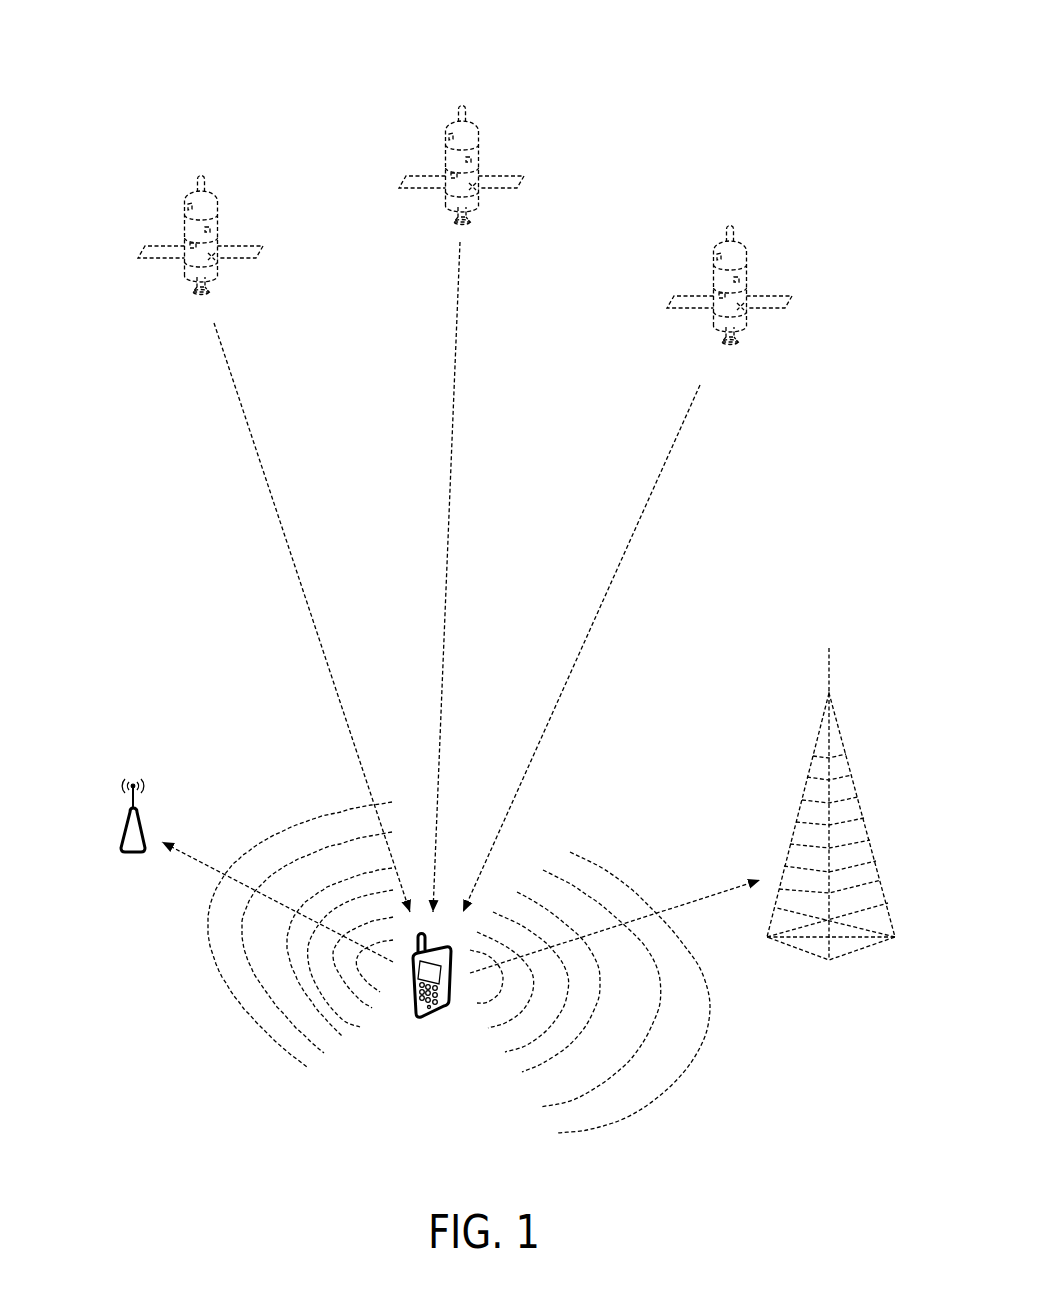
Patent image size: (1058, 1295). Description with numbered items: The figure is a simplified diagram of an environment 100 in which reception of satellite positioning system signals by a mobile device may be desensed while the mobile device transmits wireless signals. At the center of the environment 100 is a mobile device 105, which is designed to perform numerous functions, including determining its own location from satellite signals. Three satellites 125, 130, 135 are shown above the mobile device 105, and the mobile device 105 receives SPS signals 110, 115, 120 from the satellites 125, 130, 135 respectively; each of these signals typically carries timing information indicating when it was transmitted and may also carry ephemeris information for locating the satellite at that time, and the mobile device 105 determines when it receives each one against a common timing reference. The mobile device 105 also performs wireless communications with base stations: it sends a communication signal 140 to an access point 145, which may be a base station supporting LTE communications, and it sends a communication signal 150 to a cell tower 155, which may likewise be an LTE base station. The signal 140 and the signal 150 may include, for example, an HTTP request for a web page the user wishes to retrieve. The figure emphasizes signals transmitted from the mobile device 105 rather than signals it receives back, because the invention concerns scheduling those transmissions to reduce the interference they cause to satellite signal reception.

The environment 100 is at (781, 31).
The mobile device 105 is at (435, 1048).
The SPS signal 110 is at (291, 455).
The SPS signal 115 is at (461, 425).
The SPS signal 120 is at (697, 448).
The satellite 125 is at (248, 174).
The satellite 130 is at (510, 102).
The satellite 135 is at (778, 222).
The communication signal 140 is at (200, 849).
The access point 145 is at (104, 811).
The communication signal 150 is at (712, 887).
The cell tower 155 is at (878, 718).